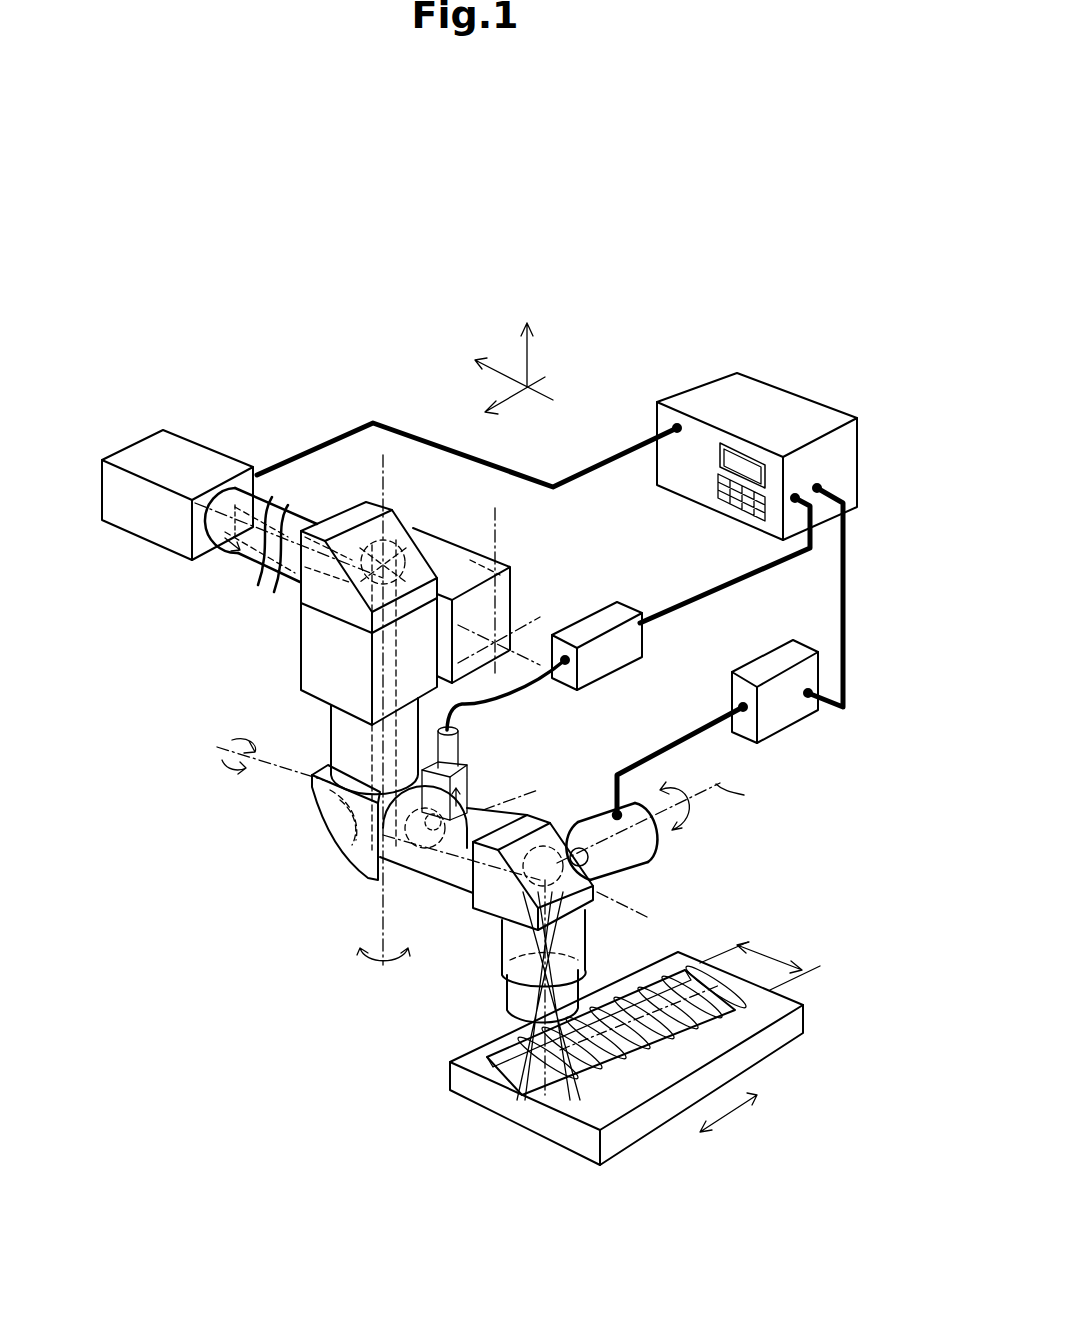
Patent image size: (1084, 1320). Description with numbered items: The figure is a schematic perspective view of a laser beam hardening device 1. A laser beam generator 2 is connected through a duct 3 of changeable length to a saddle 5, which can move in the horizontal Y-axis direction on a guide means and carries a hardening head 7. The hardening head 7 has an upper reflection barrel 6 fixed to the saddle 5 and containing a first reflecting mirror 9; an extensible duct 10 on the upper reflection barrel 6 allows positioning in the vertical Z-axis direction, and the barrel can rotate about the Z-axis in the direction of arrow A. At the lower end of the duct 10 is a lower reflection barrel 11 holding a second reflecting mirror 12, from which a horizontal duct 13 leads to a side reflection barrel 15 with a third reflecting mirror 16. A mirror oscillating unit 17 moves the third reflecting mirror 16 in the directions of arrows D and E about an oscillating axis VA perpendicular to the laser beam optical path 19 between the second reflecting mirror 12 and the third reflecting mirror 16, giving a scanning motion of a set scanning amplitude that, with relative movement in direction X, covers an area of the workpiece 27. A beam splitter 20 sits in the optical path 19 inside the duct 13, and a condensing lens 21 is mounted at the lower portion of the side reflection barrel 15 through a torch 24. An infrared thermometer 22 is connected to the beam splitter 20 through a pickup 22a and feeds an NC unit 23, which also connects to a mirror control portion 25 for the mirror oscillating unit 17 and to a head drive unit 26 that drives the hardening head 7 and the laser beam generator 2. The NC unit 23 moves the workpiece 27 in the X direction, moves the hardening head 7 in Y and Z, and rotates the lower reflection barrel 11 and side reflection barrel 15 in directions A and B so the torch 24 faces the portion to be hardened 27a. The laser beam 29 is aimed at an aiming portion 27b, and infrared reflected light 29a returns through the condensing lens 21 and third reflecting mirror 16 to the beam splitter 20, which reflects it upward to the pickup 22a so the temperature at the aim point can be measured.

The laser beam hardening device 1 is at (585, 298).
The laser beam generator 2 is at (195, 440).
The duct 3 is at (268, 503).
The saddle 5 is at (477, 563).
The upper reflection barrel 6 is at (278, 616).
The hardening head 7 is at (443, 560).
The first reflecting mirror 9 is at (385, 500).
The duct 10 is at (335, 750).
The lower reflection barrel 11 is at (338, 876).
The second reflecting mirror 12 is at (345, 820).
The duct 13 is at (478, 800).
The side reflection barrel 15 is at (552, 817).
The third reflecting mirror 16 is at (562, 822).
The mirror oscillating unit 17 is at (638, 866).
The laser beam optical path 19 is at (234, 515).
The beam splitter 20 is at (460, 892).
The condensing lens 21 is at (490, 962).
The infrared thermometer 22 is at (652, 655).
The pickup 22a is at (470, 735).
The NC unit 23 is at (795, 410).
The torch 24 is at (590, 935).
The mirror control portion 25 is at (786, 715).
The head drive unit 26 is at (507, 513).
The workpiece 27 is at (785, 1035).
The portion to be hardened 27a is at (475, 1070).
The aiming portion 27b is at (558, 1127).
The laser beam 29 is at (507, 800).
The reflected light 29a is at (510, 800).